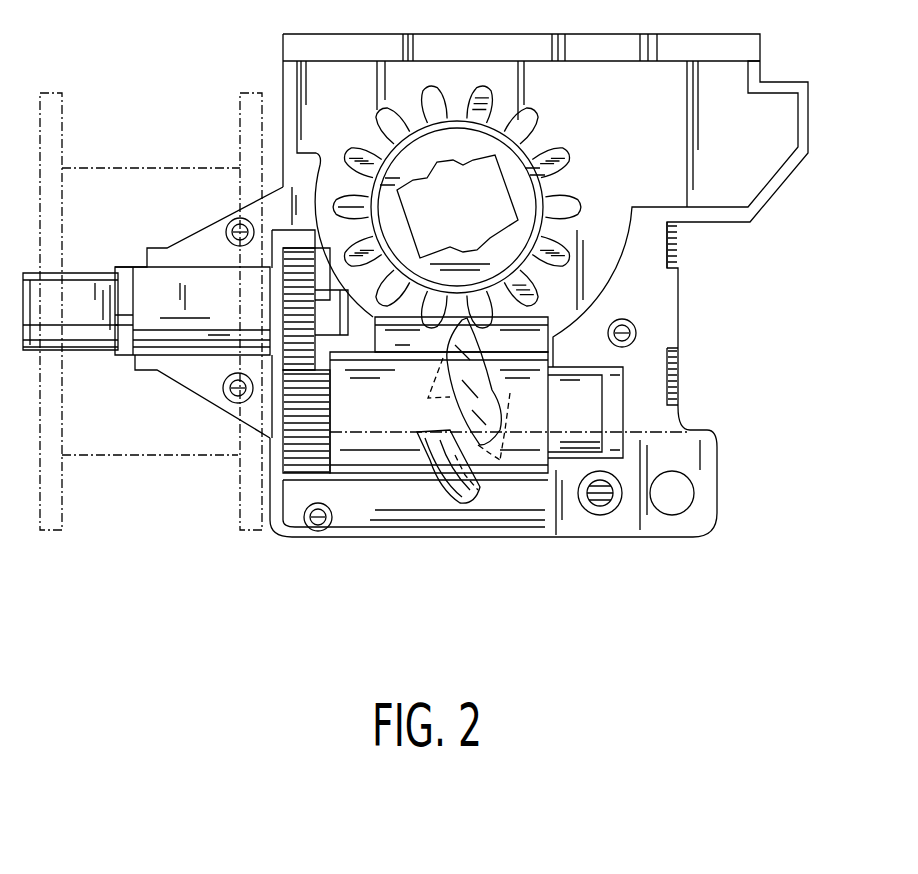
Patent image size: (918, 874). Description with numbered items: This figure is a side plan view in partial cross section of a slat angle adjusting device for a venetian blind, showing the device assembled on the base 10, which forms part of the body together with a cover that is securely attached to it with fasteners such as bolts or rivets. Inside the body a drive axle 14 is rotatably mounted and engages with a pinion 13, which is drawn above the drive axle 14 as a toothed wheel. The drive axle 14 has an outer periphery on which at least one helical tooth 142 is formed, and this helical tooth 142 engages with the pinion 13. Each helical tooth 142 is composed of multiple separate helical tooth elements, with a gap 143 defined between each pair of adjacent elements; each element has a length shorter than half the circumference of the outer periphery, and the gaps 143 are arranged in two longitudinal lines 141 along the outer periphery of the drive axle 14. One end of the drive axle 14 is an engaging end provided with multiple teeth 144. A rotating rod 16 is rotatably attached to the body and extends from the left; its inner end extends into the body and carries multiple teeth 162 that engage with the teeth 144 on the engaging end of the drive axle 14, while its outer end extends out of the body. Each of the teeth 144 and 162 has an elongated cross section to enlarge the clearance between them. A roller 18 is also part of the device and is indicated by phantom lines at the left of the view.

The base 10 is at (705, 308).
The pinion 13 is at (588, 153).
The drive axle 14 is at (424, 440).
The longitudinal lines 141 is at (650, 430).
The helical tooth 142 is at (462, 500).
The gap 143 is at (478, 452).
The teeth 144 is at (307, 420).
The rotating rod 16 is at (180, 382).
The teeth 162 is at (297, 268).
The roller 18 is at (105, 180).